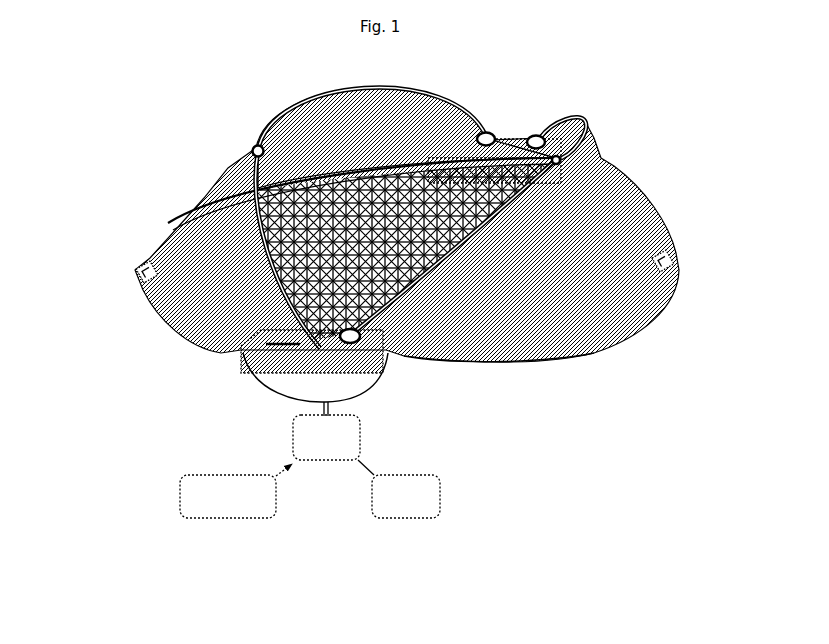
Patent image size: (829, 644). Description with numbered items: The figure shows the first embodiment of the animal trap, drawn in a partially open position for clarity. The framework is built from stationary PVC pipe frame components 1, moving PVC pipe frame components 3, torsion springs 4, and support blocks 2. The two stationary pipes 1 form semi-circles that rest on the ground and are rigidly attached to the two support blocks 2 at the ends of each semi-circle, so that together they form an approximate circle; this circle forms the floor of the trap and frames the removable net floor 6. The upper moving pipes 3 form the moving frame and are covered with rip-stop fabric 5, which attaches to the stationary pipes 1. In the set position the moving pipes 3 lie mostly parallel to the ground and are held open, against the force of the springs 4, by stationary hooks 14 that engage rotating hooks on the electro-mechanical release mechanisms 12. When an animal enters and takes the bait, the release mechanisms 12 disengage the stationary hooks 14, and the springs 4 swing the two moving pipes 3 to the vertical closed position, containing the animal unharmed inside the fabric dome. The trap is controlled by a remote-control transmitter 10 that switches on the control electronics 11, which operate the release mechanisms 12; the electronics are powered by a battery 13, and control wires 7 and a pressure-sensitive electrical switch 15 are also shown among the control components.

The stationary PVC pipe frame component 1 is at (661, 187).
The support block 2 is at (401, 256).
The moving PVC pipe frame component 3 is at (329, 78).
The torsion spring 4 is at (430, 231).
The rip-stop fabric 5 is at (374, 122).
The removable net floor 6 is at (437, 360).
The control wires 7 is at (246, 383).
The remote-control transmitter 10 is at (236, 491).
The control electronics 11 is at (326, 437).
The release mechanism 12 is at (106, 249).
The battery 13 is at (399, 489).
The stationary hooks 14 is at (243, 138).
The pressure-sensitive electrical switch 15 is at (236, 491).